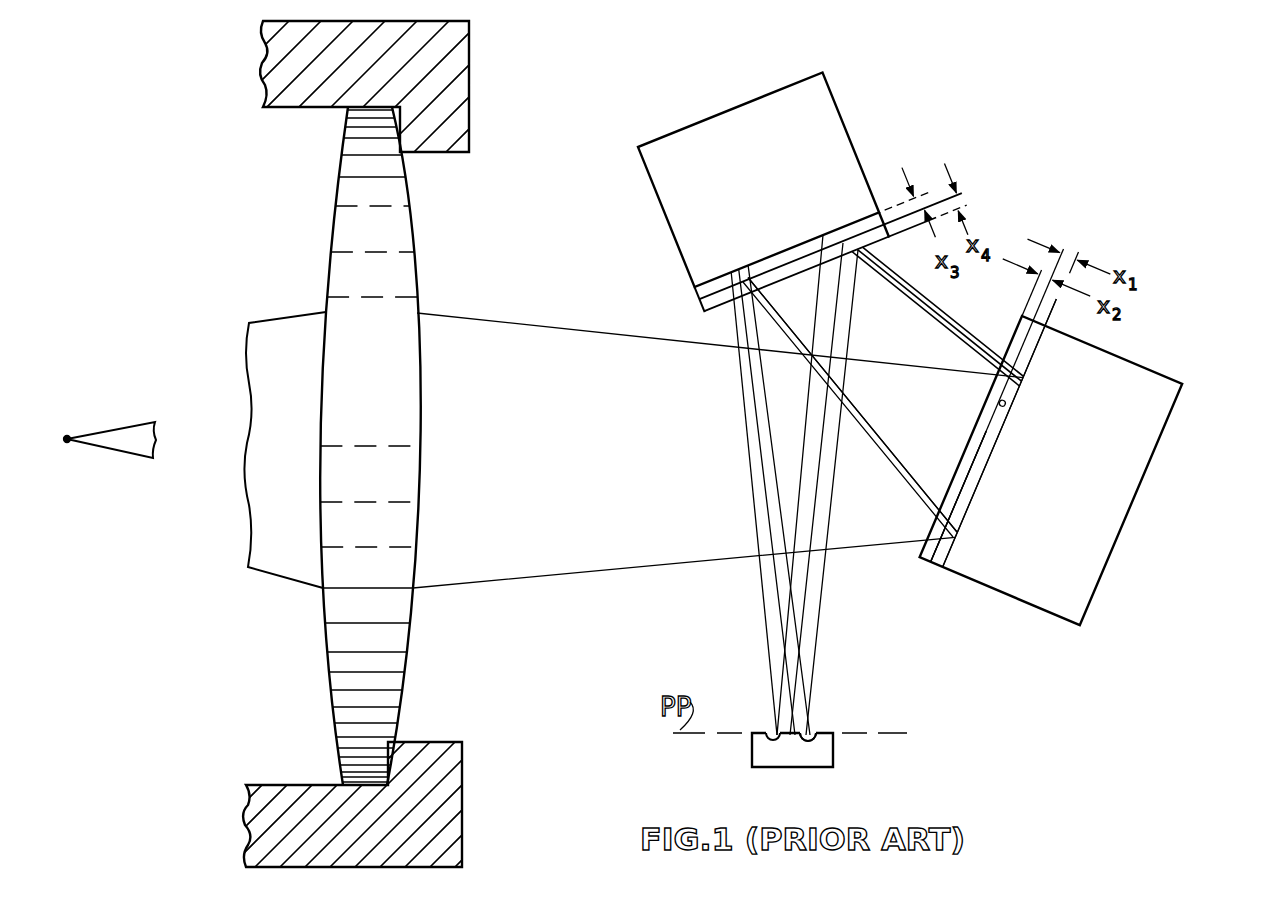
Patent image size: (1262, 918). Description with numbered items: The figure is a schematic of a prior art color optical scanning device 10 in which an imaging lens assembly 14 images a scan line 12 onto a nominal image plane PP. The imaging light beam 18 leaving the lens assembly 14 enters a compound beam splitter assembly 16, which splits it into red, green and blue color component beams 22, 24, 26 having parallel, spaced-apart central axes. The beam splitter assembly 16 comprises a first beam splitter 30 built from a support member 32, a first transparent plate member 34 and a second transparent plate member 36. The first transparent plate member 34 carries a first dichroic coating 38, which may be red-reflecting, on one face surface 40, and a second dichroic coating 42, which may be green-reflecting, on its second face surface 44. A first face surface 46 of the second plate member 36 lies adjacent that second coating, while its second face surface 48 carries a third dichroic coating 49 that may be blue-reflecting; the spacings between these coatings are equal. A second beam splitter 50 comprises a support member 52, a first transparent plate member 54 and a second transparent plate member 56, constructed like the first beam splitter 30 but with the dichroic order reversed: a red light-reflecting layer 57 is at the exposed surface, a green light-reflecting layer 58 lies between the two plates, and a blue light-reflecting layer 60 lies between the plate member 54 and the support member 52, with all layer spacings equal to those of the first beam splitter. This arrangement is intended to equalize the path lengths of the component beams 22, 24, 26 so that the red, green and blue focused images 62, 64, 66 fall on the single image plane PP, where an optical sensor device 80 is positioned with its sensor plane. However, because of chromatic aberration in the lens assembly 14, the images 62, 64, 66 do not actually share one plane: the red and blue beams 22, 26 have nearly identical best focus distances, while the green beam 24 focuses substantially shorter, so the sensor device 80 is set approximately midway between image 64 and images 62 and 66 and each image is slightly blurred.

The optical scanning device 10 is at (548, 95).
The scan line 12 is at (67, 437).
The imaging lens assembly 14 is at (420, 262).
The beam splitter assembly 16 is at (937, 124).
The imaging light beam 18 is at (508, 325).
The red color component beam 22 is at (805, 664).
The green color component beam 24 is at (790, 676).
The blue color component beam 26 is at (775, 690).
The first beam splitter 30 is at (1145, 329).
The support member 32 is at (1168, 388).
The first transparent plate member 34 is at (1025, 355).
The second transparent plate member 36 is at (977, 422).
The first dichroic coating 38 is at (997, 447).
The face surface 40 is at (997, 447).
The second dichroic coating 42 is at (962, 487).
The second face surface 44 is at (962, 487).
The first face surface 46 is at (1003, 403).
The second face surface 48 is at (953, 470).
The third dichroic coating 49 is at (857, 405).
The second beam splitter 50 is at (692, 104).
The support member 52 is at (838, 120).
The first transparent plate member 54 is at (868, 188).
The second transparent plate member 56 is at (883, 240).
The red light-reflecting dichroic layer 57 is at (713, 318).
The green light-reflecting layer 58 is at (708, 304).
The blue light-reflecting layer 60 is at (716, 278).
The red focused image 62 is at (822, 735).
The green focused image 64 is at (803, 730).
The blue focused image 66 is at (768, 736).
The optical sensor device 80 is at (840, 760).